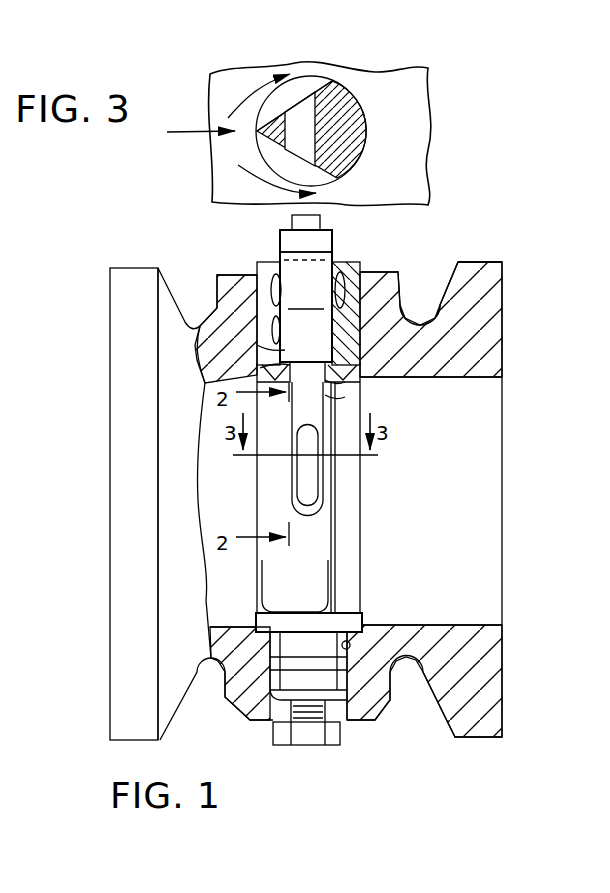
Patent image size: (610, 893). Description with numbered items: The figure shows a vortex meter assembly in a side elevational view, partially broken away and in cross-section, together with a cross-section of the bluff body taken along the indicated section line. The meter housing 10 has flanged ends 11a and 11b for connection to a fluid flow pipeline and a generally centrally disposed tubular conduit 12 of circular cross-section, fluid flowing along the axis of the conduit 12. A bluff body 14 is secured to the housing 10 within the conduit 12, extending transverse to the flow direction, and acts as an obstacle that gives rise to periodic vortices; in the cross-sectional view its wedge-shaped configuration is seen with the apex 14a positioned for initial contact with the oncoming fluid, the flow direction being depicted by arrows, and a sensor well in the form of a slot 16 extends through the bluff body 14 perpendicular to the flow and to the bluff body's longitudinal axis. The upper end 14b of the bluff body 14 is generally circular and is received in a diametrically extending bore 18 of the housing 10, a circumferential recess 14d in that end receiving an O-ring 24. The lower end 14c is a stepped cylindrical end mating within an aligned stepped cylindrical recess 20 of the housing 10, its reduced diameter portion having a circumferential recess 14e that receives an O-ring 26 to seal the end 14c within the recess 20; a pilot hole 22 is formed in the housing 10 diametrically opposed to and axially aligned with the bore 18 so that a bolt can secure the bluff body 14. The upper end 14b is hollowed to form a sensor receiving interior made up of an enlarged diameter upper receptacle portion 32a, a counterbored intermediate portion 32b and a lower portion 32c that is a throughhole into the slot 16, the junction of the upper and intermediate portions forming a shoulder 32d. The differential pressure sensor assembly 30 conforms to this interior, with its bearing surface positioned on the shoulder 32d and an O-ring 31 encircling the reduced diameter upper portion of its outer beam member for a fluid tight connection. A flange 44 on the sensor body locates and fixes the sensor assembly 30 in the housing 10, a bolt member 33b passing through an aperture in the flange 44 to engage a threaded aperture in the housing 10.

In FIG. 1, the meter housing 10 is at (110, 650).
In FIG. 1, the flanged end 11a is at (118, 306).
In FIG. 1, the flanged end 11b is at (490, 273).
In FIG. 3, the tubular conduit 12 is at (405, 124).
In FIG. 1, the tubular conduit 12 is at (494, 504).
In FIG. 3, the bluff body 14 is at (344, 134).
In FIG. 1, the bluff body 14 is at (327, 487).
In FIG. 3, the apex of the wedge 14a is at (257, 133).
In FIG. 1, the upper end of the bluff body 14b is at (234, 284).
In FIG. 1, the lower end of the bluff body 14c is at (380, 608).
In FIG. 1, the circumferential recess 14d is at (405, 324).
In FIG. 1, the circumferential recess 14e is at (345, 683).
In FIG. 3, the slot 16 is at (343, 153).
In FIG. 1, the slot 16 is at (314, 498).
In FIG. 1, the bore 18 is at (361, 274).
In FIG. 1, the stepped cylindrical recess 20 is at (350, 646).
In FIG. 1, the pilot hole 22 is at (315, 710).
In FIG. 1, the O-ring 24 is at (257, 352).
In FIG. 1, the O-ring 26 is at (317, 668).
In FIG. 1, the sensor assembly 30 is at (306, 296).
In FIG. 1, the O-ring 31 is at (290, 366).
In FIG. 1, the upper receptacle portion 32a is at (281, 263).
In FIG. 1, the intermediate portion 32b is at (330, 384).
In FIG. 1, the lower portion 32c is at (330, 399).
In FIG. 1, the shoulder 32d is at (258, 348).
In FIG. 1, the bolt member 33b is at (322, 222).
In FIG. 1, the flange 44 is at (328, 244).